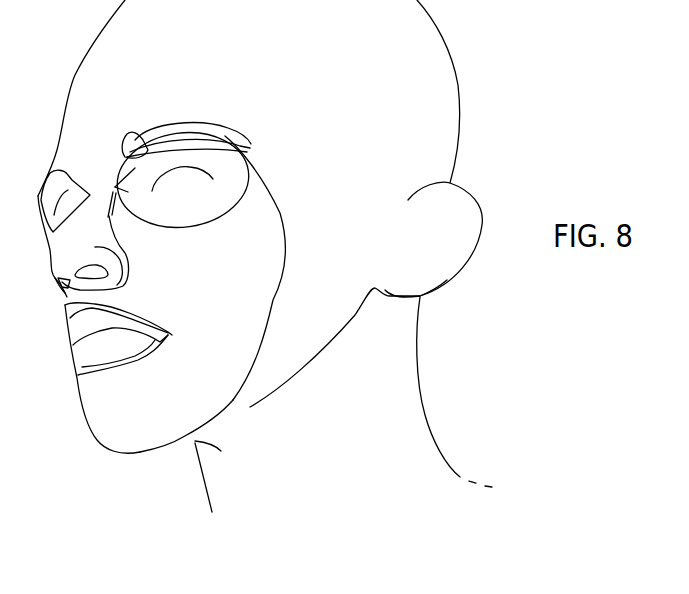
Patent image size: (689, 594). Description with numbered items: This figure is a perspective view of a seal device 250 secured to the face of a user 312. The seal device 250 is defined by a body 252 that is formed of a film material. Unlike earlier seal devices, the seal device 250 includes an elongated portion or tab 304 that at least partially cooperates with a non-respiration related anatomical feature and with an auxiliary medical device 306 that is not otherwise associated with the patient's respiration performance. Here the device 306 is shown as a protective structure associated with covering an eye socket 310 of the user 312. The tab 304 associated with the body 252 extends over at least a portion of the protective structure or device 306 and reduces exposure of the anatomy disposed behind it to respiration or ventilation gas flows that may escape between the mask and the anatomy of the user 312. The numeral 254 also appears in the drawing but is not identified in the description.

The seal device 250 is at (187, 115).
The body 252 is at (227, 276).
The side of face 254 is at (243, 207).
The tab 304 is at (233, 142).
The auxiliary medical device 306 is at (197, 143).
The eye socket 310 is at (115, 187).
The user 312 is at (138, 88).